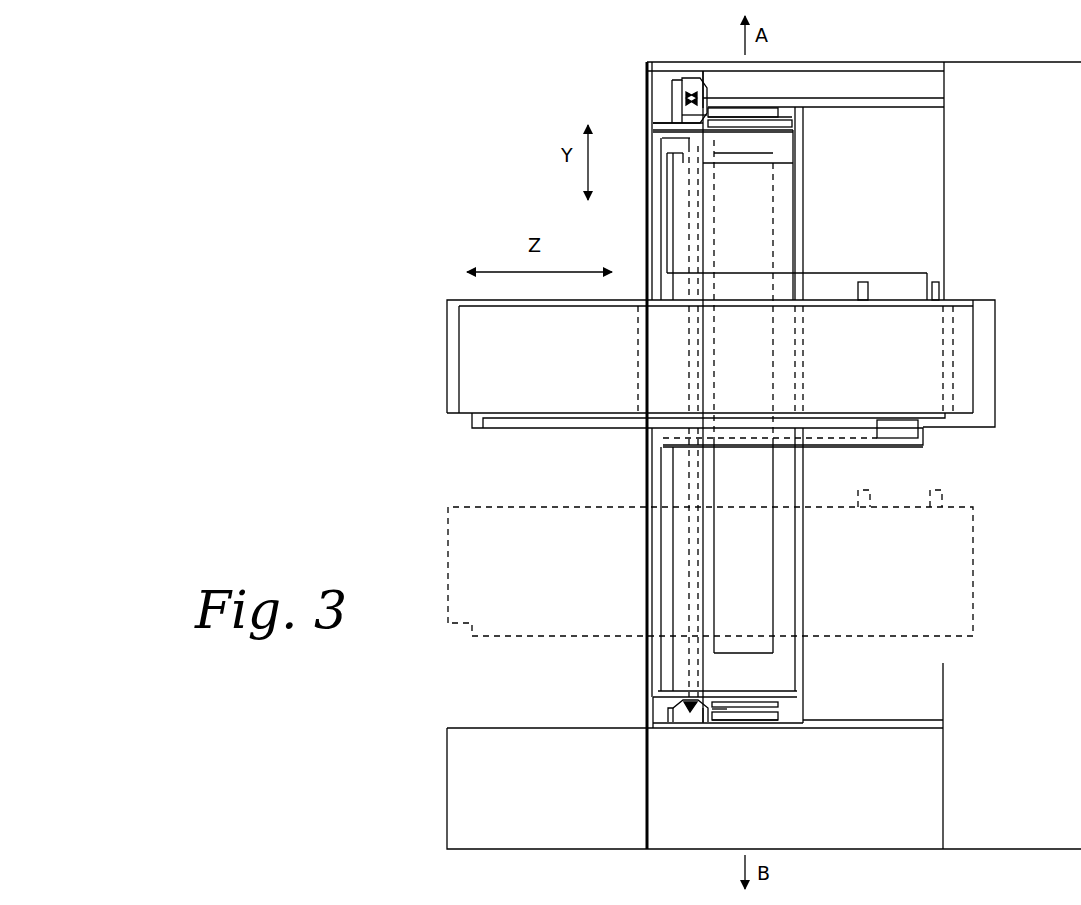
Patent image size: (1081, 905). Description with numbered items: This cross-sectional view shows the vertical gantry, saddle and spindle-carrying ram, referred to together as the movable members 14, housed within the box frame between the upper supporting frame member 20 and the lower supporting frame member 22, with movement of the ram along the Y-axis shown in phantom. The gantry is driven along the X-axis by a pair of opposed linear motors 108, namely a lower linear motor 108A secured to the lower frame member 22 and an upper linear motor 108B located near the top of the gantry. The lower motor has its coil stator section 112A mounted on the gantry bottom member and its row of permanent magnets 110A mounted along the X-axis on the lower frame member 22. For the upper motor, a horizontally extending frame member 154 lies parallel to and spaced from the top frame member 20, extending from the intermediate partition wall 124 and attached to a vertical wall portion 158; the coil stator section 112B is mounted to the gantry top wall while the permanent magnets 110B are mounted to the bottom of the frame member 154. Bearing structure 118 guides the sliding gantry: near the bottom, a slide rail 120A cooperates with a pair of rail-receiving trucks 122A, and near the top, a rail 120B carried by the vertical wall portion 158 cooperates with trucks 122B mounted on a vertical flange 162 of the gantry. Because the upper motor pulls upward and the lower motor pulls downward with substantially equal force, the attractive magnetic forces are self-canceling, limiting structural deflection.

The movable members 14 is at (630, 252).
The upper supporting frame member 20 is at (848, 63).
The lower supporting frame member 22 is at (935, 723).
The linear motors 108 is at (856, 85).
The lower linear motor 108A is at (788, 716).
The upper linear motor 108B is at (790, 114).
The permanent magnets 110A is at (745, 719).
The permanent magnets 110B is at (745, 107).
The coil stator section 112A is at (728, 703).
The coil stator section 112B is at (798, 123).
The bearing structure 118 is at (933, 434).
The slide rail 120A is at (683, 702).
The rail 120B is at (697, 93).
The rail-receiving trucks 122A is at (667, 711).
The trucks 122B is at (684, 96).
The intermediate partition wall 124 is at (945, 178).
The horizontally extending frame member 154 is at (933, 103).
The vertical wall portion 158 is at (702, 77).
The vertical flange 162 is at (673, 117).